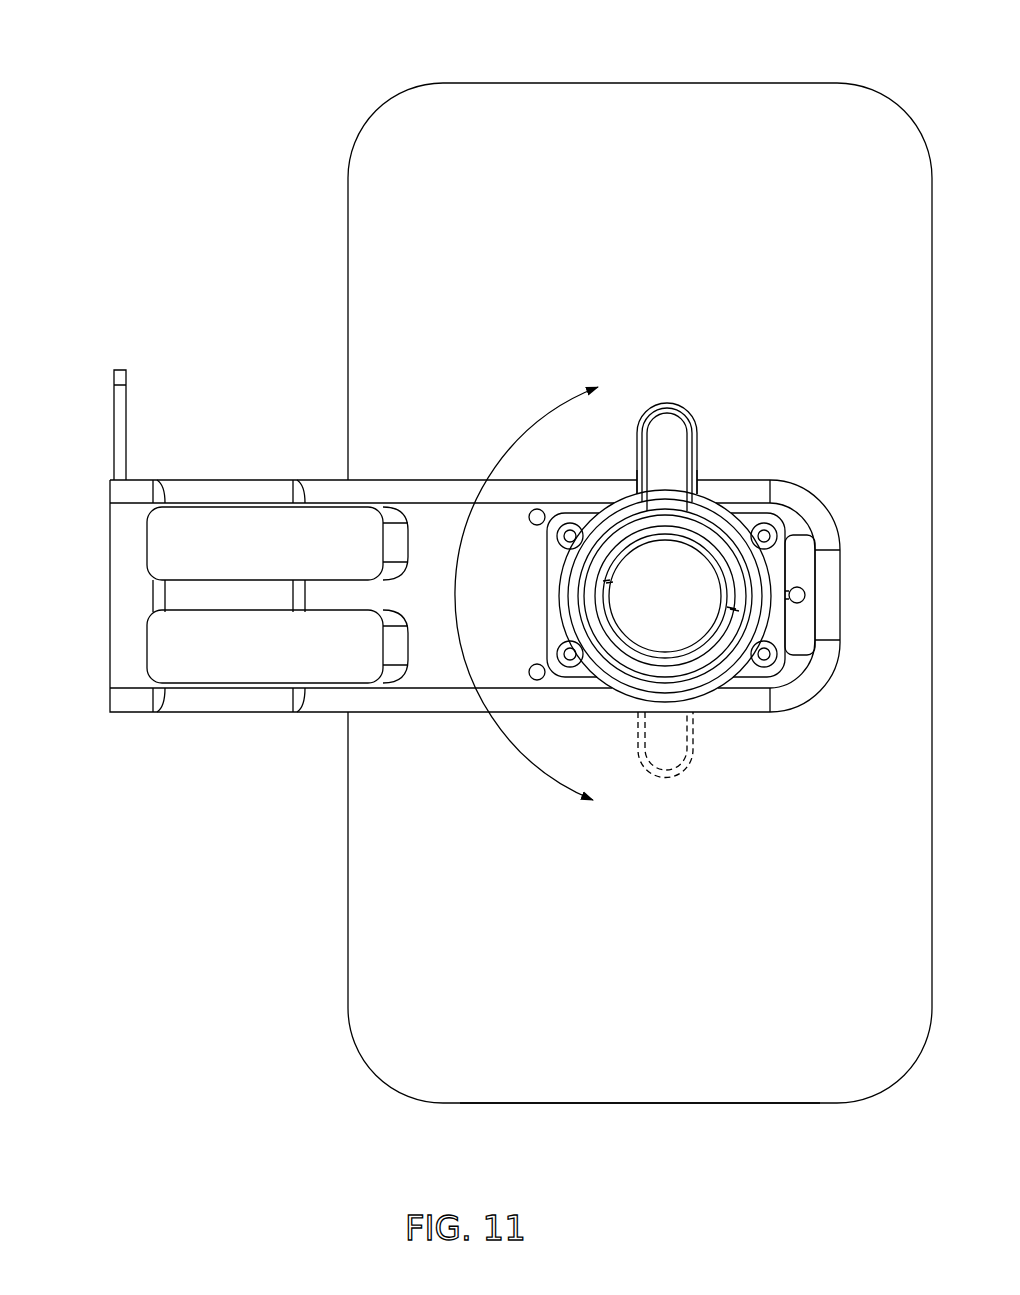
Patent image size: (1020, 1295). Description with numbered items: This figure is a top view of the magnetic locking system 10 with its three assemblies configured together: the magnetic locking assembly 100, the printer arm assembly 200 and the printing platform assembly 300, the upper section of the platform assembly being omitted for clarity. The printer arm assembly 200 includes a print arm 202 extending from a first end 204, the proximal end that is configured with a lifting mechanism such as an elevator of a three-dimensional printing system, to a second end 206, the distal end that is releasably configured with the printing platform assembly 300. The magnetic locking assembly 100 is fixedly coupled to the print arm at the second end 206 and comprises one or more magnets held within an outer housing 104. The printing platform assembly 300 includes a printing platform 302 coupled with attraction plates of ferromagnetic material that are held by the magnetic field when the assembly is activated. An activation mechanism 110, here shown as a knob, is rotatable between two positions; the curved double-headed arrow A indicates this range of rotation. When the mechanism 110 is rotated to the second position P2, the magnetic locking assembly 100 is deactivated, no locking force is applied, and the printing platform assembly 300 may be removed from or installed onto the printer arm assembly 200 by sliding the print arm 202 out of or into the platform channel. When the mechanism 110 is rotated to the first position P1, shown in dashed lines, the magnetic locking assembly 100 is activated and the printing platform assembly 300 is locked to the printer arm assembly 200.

The magnetic locking system 10 is at (256, 49).
The magnetic locking assembly 100 is at (723, 445).
The outer housing 104 is at (786, 538).
The activation mechanism 110 is at (668, 403).
The printer arm assembly 200 is at (209, 429).
The print arm 202 is at (240, 712).
The first end 204 is at (110, 551).
The second end 206 is at (841, 622).
The printing platform assembly 300 is at (770, 59).
The printing platform 302 is at (588, 1104).
The first position P1 is at (667, 788).
The second position P2 is at (655, 391).
The rotation direction A is at (526, 580).